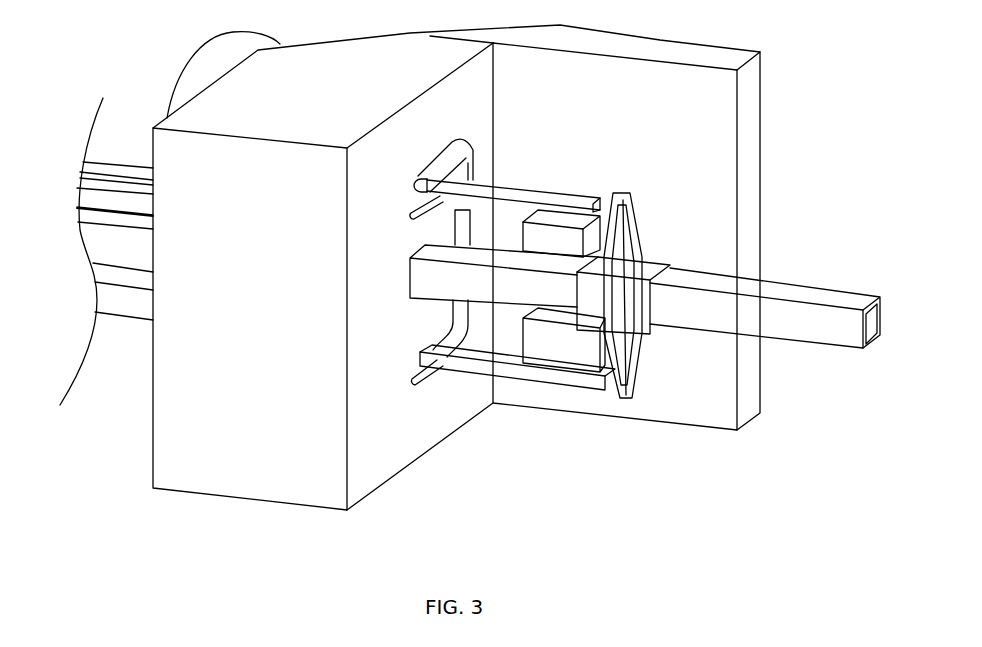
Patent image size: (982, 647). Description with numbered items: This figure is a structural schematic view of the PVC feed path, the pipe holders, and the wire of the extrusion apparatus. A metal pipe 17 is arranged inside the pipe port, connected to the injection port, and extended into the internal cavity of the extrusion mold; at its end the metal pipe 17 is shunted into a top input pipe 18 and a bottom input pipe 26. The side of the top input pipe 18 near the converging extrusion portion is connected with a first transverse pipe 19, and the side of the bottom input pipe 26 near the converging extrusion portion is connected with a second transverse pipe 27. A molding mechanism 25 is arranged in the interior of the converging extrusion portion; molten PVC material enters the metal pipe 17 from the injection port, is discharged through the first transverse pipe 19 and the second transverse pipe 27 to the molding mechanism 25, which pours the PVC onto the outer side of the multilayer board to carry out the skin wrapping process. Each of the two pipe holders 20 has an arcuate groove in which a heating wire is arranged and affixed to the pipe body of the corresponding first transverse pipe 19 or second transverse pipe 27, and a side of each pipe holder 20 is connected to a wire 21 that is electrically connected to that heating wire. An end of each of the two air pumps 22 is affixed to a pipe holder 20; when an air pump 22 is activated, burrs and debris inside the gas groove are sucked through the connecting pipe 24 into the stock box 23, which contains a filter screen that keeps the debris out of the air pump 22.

The metal pipe 17 is at (497, 215).
The top input pipe 18 is at (467, 160).
The first transverse pipe 19 is at (424, 178).
The pipe holder 20 is at (413, 173).
The wire 21 is at (410, 213).
The air pump 22 is at (547, 232).
The stock box 23 is at (633, 203).
The connecting pipe 24 is at (645, 264).
The molding mechanism 25 is at (664, 263).
The bottom input pipe 26 is at (443, 340).
The second transverse pipe 27 is at (543, 390).